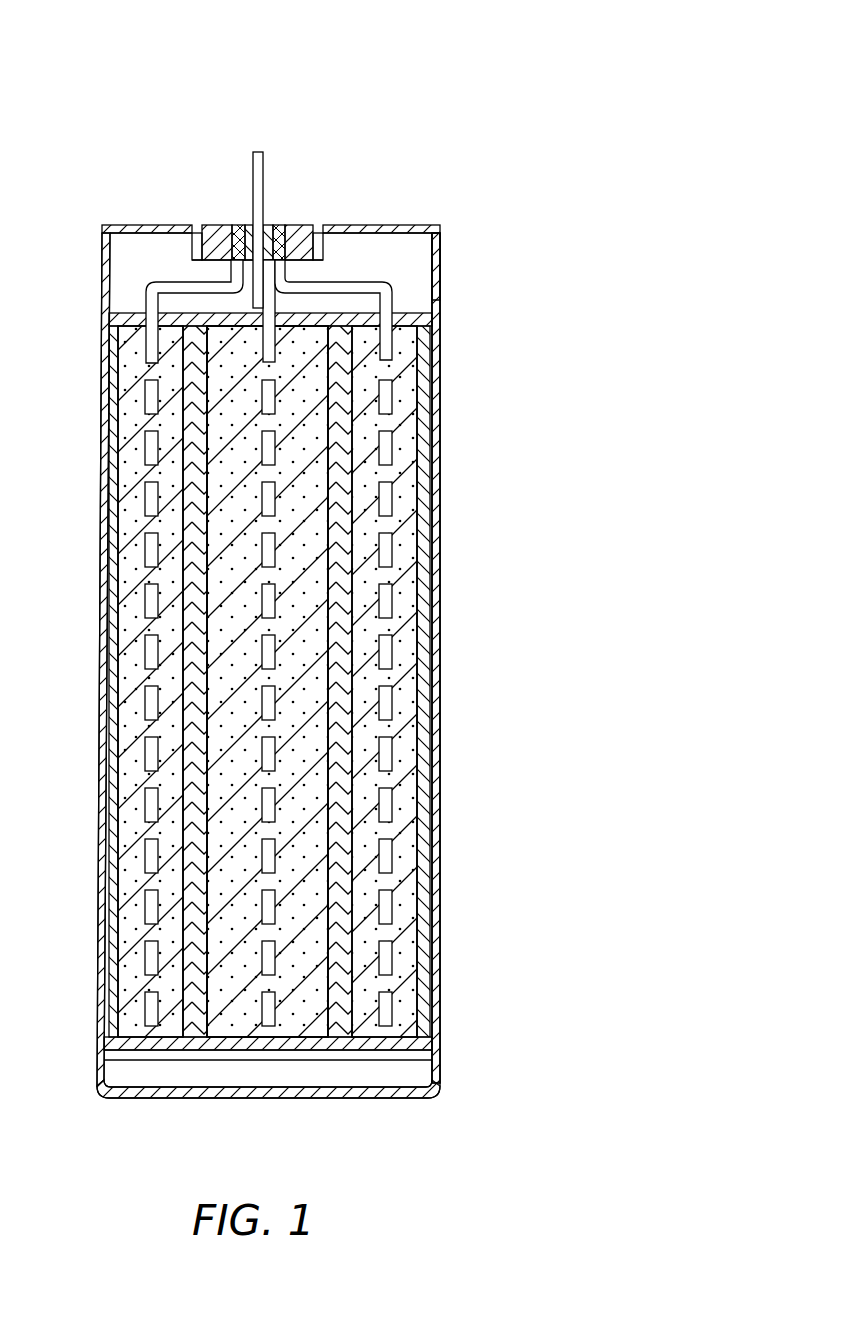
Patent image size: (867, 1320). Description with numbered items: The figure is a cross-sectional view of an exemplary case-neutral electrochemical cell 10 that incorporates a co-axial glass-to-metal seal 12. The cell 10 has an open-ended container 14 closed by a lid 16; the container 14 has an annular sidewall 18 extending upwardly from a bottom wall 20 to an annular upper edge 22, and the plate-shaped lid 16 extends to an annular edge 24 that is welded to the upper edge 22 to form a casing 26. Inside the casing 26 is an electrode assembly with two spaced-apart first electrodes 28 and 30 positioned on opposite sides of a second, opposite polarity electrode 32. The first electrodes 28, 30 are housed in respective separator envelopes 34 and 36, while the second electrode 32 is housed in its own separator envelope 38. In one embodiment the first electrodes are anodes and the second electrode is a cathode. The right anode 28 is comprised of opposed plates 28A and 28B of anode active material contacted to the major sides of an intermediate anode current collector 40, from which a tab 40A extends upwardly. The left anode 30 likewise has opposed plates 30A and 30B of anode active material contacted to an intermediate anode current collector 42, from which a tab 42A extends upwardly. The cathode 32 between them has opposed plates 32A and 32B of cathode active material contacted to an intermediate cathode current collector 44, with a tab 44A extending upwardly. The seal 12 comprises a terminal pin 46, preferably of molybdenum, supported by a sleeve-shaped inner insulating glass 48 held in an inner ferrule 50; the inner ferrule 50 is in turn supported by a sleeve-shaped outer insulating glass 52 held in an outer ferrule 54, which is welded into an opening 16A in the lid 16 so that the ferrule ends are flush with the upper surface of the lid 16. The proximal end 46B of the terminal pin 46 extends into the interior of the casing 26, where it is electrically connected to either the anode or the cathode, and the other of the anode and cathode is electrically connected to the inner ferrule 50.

The case-neutral electrochemical cell 10 is at (462, 103).
The co-axial glass-to-metal seal 12 is at (340, 248).
The container 14 is at (438, 660).
The lid 16 is at (377, 228).
The opening in the lid 16A is at (348, 227).
The annular sidewall 18 is at (438, 899).
The bottom wall 20 is at (386, 1100).
The annular upper edge 22 is at (103, 231).
The annular edge 24 is at (124, 229).
The casing 26 is at (488, 248).
The right first electrode 28 is at (405, 530).
The plate of anode active material 28A is at (412, 394).
The plate of anode active material 28B is at (370, 356).
The left first electrode 30 is at (130, 1001).
The plate of anode active material 30A is at (150, 380).
The plate of anode active material 30B is at (133, 363).
The second electrode 32 is at (225, 880).
The plate of cathode active material 32A is at (303, 1028).
The plate of cathode active material 32B is at (236, 1022).
The separator envelope 34 is at (342, 463).
The separator envelope 36 is at (192, 557).
The separator envelope 38 is at (208, 602).
The anode current collector 40 is at (392, 596).
The tab 40A is at (392, 288).
The anode current collector 42 is at (150, 502).
The tab 42A is at (148, 288).
The cathode current collector 44 is at (275, 806).
The tab 44A is at (118, 321).
The terminal pin 46 is at (263, 158).
The proximal end 46B is at (125, 297).
The inner insulating glass 48 is at (280, 224).
The inner ferrule 50 is at (283, 229).
The outer insulating glass 52 is at (219, 228).
The outer ferrule 54 is at (197, 231).